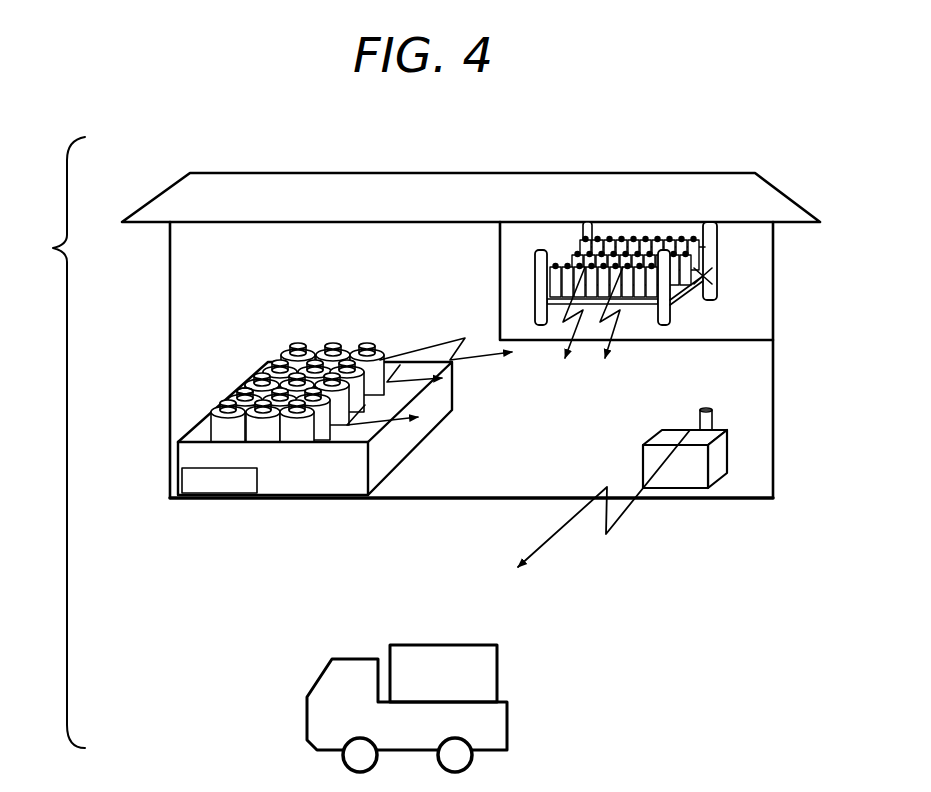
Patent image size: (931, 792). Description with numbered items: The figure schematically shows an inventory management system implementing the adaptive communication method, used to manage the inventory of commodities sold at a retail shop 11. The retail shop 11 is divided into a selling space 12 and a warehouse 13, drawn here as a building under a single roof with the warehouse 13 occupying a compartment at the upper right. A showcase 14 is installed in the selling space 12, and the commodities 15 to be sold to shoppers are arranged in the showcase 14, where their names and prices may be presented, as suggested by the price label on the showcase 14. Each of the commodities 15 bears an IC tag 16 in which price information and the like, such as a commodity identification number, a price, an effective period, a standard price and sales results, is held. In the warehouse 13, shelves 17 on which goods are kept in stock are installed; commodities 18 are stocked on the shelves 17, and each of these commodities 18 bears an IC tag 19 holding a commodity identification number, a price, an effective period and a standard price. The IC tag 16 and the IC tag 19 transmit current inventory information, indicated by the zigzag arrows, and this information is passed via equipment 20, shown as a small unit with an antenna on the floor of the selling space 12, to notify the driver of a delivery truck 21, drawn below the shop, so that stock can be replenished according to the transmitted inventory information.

The retail shop 11 is at (628, 182).
The selling space 12 is at (182, 268).
The warehouse 13 is at (767, 325).
The showcase 14 is at (285, 429).
The commodities 15 is at (228, 398).
The IC tag 16 is at (238, 392).
The shelves 17 is at (717, 270).
The commodities 18 is at (720, 250).
The IC tag 19 is at (718, 288).
The equipment 20 is at (685, 480).
The delivery truck 21 is at (495, 724).